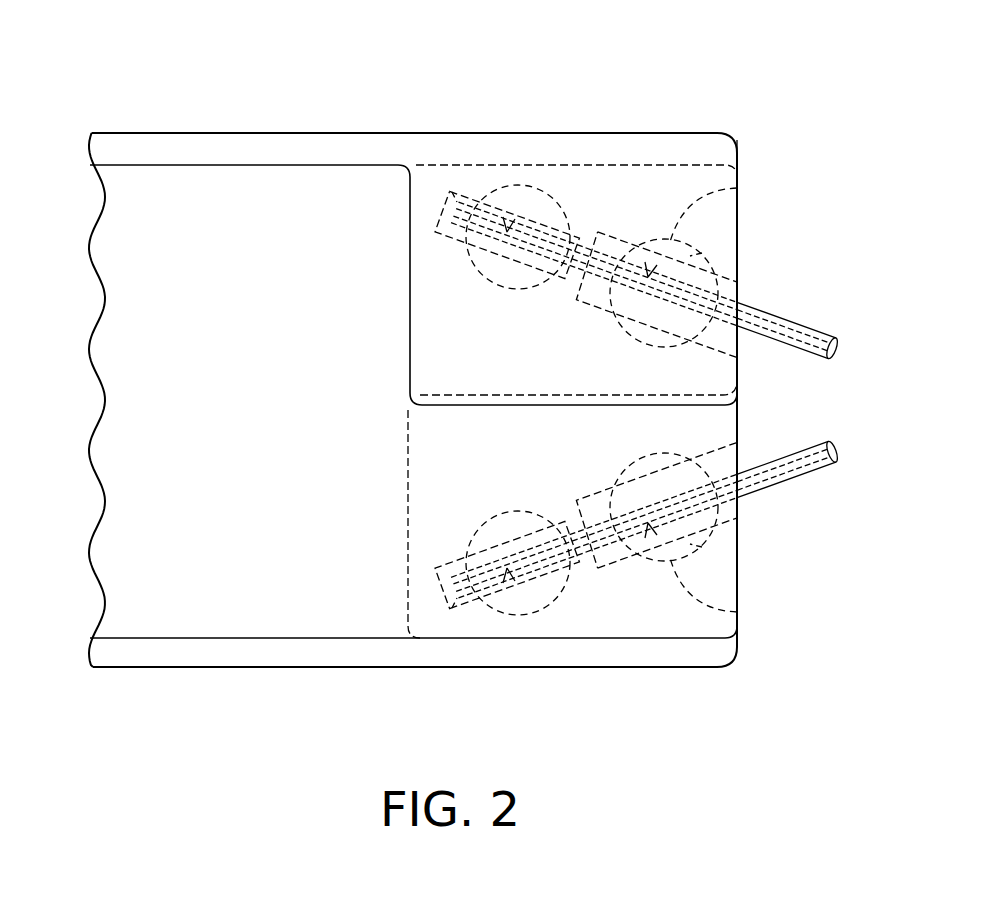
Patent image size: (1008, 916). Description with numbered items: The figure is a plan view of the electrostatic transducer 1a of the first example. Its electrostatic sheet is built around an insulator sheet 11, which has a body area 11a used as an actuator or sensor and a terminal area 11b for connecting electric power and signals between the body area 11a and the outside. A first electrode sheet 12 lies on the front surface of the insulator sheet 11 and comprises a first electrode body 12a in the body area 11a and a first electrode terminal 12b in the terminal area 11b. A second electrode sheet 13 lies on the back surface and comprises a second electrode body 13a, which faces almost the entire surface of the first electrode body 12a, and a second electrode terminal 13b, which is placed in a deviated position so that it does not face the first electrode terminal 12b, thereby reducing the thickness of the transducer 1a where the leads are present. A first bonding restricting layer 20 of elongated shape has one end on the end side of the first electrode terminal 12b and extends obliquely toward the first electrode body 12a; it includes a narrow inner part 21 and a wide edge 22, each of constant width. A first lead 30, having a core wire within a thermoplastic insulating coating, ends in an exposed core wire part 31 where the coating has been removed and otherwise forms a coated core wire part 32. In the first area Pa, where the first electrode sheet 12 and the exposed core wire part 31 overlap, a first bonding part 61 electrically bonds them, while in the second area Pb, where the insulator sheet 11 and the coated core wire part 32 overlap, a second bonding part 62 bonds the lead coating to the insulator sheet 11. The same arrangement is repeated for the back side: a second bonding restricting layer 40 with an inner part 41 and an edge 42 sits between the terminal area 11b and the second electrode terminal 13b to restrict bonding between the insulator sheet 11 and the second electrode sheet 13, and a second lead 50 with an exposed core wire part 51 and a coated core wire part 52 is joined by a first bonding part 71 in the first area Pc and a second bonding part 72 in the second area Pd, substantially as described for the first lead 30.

The transducer 1a is at (758, 124).
The insulator sheet 11 is at (248, 140).
The body area 11a is at (302, 145).
The terminal area 11b is at (727, 157).
The first electrode sheet 12 is at (162, 638).
The first electrode body 12a is at (205, 632).
The first electrode terminal 12b is at (697, 628).
The second electrode sheet 13 is at (143, 172).
The second electrode body 13a is at (187, 173).
The second electrode terminal 13b is at (697, 172).
The first bonding restricting layer 20 is at (548, 722).
The inner part 21 is at (543, 568).
The edge 22 is at (623, 565).
The first lead 30 is at (812, 470).
The exposed core wire part 31 is at (455, 607).
The coated core wire part 32 is at (702, 547).
The second bonding restricting layer 40 is at (628, 76).
The inner part 41 is at (543, 232).
The edge 42 is at (623, 235).
The second lead 50 is at (812, 330).
The exposed core wire part 51 is at (453, 193).
The coated core wire part 52 is at (702, 253).
The first bonding part 61 is at (507, 568).
The second bonding part 62 is at (648, 523).
The first bonding part 71 is at (507, 232).
The second bonding part 72 is at (648, 277).
The first area Pa is at (488, 610).
The second area Pb is at (740, 612).
The first area Pc is at (488, 190).
The second area Pd is at (740, 188).